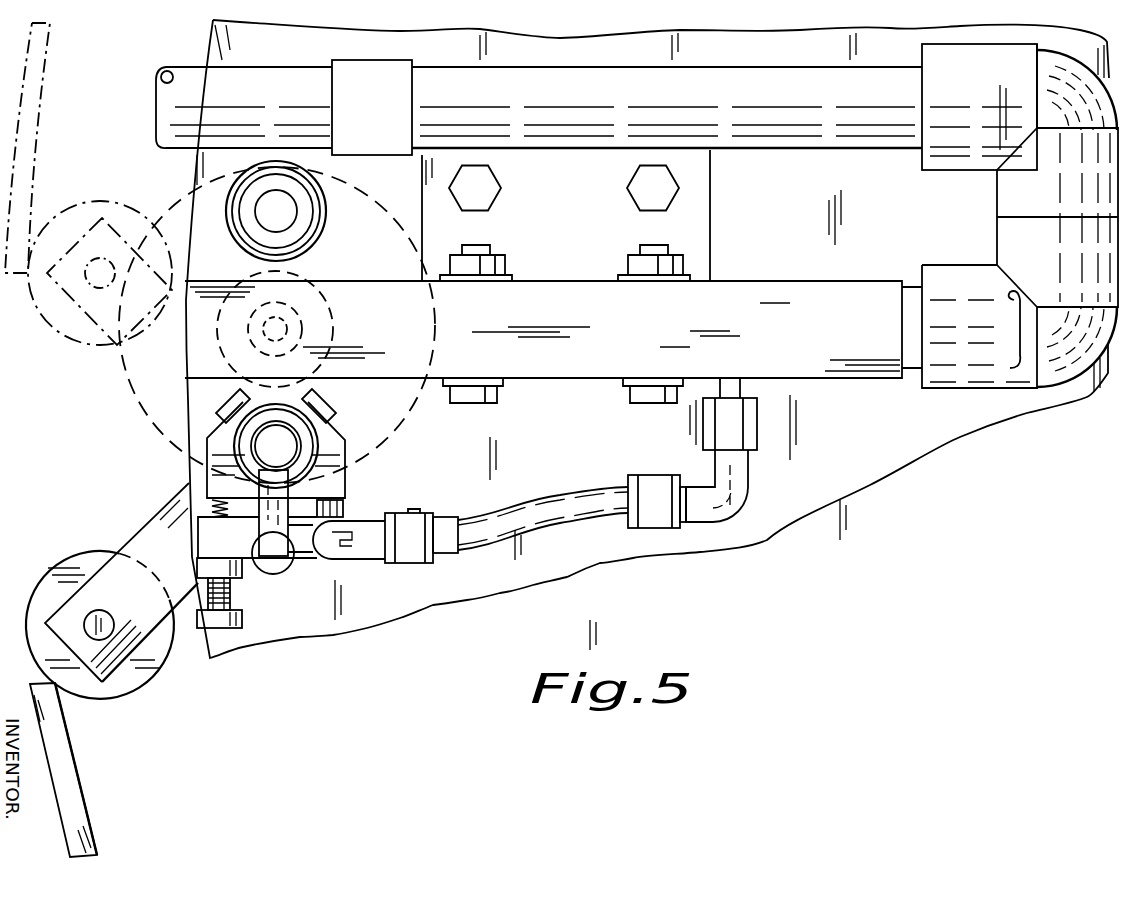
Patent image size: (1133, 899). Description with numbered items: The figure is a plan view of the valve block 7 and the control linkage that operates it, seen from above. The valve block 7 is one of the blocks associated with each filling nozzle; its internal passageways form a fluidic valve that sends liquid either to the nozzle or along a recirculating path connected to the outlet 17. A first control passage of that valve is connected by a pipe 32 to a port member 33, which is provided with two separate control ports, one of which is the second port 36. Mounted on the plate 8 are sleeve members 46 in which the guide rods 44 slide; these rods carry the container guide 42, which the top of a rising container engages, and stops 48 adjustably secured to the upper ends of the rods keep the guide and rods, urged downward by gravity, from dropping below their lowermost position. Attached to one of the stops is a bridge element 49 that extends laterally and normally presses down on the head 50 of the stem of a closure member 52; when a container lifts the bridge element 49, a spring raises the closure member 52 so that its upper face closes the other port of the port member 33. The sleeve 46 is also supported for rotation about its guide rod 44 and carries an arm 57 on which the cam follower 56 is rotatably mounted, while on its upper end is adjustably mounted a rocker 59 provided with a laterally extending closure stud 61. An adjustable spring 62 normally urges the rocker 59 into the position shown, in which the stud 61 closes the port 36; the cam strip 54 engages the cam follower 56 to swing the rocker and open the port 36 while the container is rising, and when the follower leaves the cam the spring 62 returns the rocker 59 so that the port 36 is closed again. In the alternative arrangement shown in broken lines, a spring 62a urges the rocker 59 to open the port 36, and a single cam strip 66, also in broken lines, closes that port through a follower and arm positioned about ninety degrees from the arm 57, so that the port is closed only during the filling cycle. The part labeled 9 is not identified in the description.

The valve block 7 is at (646, 340).
The plate 8 is at (595, 451).
The return bend block 9 is at (980, 340).
The outlet 17 is at (252, 123).
The pipe 32 is at (530, 522).
The port member 33 is at (200, 538).
The control port 36 is at (337, 551).
The guide 42 is at (178, 218).
The guide rods 44 is at (285, 217).
The sleeve members 46 is at (290, 182).
The stops 48 is at (300, 202).
The bridge element 49 is at (278, 565).
The head 50 is at (259, 548).
The closure member 52 is at (283, 556).
The cam strip 54 is at (70, 796).
The cam follower 56 is at (135, 682).
The arm 57 is at (140, 606).
The rocker 59 is at (337, 443).
The closure stud 61 is at (335, 498).
The adjustable spring 62 is at (210, 507).
The spring 62a is at (345, 503).
The cam strip 66 is at (22, 155).